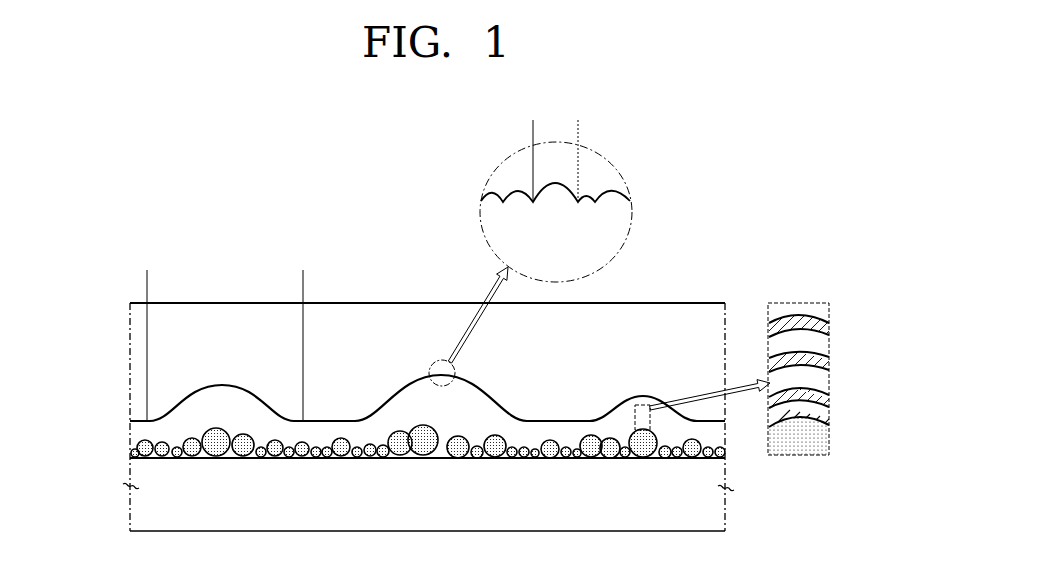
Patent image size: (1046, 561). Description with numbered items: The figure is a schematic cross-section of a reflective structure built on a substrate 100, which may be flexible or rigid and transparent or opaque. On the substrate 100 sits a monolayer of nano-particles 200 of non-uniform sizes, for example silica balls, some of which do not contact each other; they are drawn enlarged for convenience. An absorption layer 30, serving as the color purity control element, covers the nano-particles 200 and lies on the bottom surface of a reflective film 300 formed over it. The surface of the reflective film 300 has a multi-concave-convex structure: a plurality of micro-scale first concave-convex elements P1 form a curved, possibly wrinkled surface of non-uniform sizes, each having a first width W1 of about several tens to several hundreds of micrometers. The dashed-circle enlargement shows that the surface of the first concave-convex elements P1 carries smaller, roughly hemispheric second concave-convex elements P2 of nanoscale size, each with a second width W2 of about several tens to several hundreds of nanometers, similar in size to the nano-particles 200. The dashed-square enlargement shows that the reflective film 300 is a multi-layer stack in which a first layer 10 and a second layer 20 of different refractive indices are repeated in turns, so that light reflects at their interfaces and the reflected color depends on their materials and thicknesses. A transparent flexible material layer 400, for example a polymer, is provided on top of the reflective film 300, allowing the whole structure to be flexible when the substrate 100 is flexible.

The substrate 100 is at (130, 515).
The nano-particles 200 is at (122, 453).
The reflective film 300 is at (130, 428).
The transparent flexible material layer 400 is at (130, 347).
The first layer 10 is at (826, 400).
The second layer 20 is at (822, 380).
The absorption layer 30 is at (822, 413).
The first concave-convex elements P1 is at (384, 369).
The second concave-convex elements P2 is at (518, 174).
The first width W1 is at (303, 274).
The second width W2 is at (578, 127).